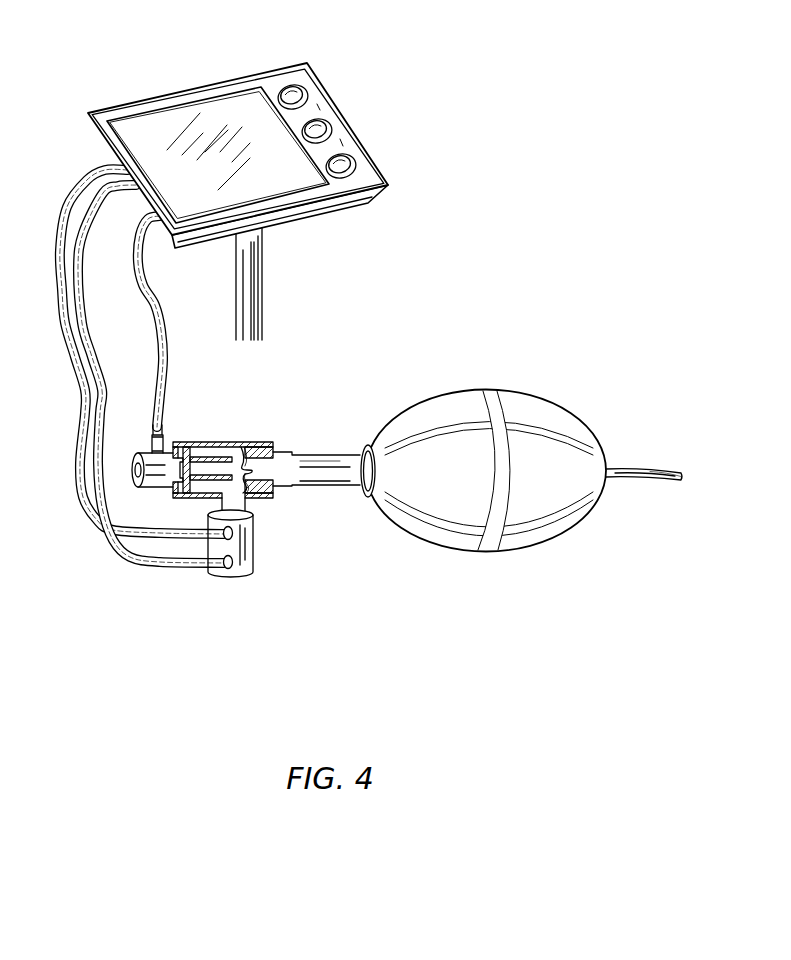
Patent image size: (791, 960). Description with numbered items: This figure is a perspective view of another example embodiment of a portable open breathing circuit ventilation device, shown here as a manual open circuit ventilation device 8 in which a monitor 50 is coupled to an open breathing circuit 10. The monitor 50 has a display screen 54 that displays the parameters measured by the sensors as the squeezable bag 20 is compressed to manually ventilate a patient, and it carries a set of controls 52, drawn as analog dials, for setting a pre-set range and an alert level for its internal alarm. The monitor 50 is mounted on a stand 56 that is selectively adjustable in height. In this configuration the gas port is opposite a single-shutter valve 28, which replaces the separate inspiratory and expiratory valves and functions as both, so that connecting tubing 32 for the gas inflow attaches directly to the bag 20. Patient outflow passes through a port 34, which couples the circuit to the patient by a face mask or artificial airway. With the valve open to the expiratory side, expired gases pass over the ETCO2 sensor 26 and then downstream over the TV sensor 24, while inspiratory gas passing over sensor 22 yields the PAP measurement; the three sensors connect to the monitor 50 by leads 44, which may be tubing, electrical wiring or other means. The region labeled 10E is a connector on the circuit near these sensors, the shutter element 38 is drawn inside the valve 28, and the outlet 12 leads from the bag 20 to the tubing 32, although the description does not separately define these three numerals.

The manual open circuit ventilation device 8 is at (287, 129).
The open breathing circuit 10 is at (420, 347).
The connector port 10E is at (134, 477).
The outlet tube 12 is at (609, 463).
The squeezable bag 20 is at (550, 397).
The sensor 22 is at (233, 532).
The TV sensor 24 is at (163, 426).
The ETCO2 sensor 26 is at (233, 558).
The single-shutter valve 28 is at (260, 442).
The connecting tubing 32 is at (657, 483).
The port 34 is at (251, 546).
The valve membrane 38 is at (246, 442).
The lead 44 is at (67, 212).
The monitor 50 is at (339, 131).
The set of controls 52 is at (352, 155).
The display screen 54 is at (137, 128).
The stand 56 is at (263, 287).